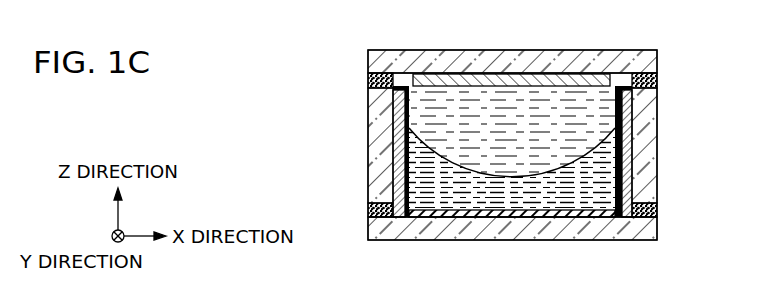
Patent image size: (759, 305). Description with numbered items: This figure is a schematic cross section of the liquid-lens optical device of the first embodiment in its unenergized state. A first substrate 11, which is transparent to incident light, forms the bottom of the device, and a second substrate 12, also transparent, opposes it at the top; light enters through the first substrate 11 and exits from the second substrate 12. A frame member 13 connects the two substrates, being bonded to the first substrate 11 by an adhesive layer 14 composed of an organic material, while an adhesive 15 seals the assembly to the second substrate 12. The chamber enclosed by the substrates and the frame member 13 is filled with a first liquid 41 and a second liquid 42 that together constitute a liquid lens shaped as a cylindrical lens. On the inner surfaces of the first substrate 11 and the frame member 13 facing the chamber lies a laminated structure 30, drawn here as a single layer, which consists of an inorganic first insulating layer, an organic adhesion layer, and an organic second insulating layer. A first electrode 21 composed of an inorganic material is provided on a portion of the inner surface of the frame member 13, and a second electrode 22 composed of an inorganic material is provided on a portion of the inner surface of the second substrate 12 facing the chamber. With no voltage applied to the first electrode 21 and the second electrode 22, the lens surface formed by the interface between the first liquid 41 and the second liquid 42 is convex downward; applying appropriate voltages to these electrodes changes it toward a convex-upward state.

The first substrate 11 is at (527, 230).
The second substrate 12 is at (612, 60).
The frame member 13 is at (382, 122).
The adhesive layer 14 is at (372, 208).
The adhesive 15 is at (373, 82).
The first electrode 21 is at (398, 183).
The second electrode 22 is at (527, 78).
The laminated structure 30 is at (587, 213).
The first liquid 41 is at (462, 200).
The second liquid 42 is at (482, 100).